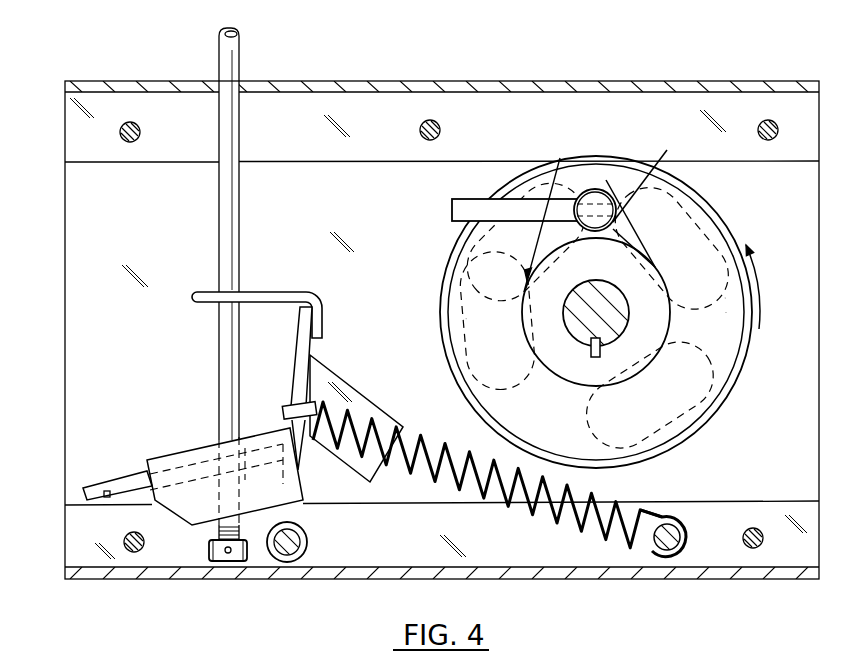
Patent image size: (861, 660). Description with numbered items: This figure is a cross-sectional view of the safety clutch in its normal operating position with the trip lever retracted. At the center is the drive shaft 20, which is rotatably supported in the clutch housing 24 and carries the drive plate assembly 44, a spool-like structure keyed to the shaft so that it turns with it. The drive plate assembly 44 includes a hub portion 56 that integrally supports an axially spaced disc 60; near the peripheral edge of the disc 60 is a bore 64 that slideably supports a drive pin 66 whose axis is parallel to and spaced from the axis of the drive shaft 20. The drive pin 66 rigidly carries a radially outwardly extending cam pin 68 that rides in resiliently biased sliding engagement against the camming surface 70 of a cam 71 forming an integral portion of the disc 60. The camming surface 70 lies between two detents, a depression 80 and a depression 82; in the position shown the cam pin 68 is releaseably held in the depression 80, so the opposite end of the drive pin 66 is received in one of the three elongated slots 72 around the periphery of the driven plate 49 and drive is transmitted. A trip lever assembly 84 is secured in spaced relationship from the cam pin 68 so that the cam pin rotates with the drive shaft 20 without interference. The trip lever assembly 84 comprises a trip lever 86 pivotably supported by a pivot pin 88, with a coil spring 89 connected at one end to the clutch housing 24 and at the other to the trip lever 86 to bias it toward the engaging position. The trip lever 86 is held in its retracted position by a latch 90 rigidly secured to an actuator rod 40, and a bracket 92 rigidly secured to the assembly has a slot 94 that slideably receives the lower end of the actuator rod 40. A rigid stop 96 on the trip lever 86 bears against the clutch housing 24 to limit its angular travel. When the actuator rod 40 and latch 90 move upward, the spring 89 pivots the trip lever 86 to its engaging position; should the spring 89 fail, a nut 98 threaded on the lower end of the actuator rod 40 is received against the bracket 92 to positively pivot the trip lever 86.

The drive shaft 20 is at (618, 311).
The clutch housing 24 is at (65, 118).
The actuator rod 40 is at (240, 63).
The drive plate assembly 44 is at (690, 449).
The driven plate 49 is at (764, 277).
The hub portion 56 is at (552, 256).
The disc 60 is at (738, 348).
The bore 64 is at (650, 175).
The drive pin 66 is at (657, 184).
The cam pin 68 is at (463, 200).
The camming surface 70 is at (590, 190).
The cam 71 is at (611, 200).
The slots 72 is at (462, 271).
The depression 80 is at (568, 192).
The depression 82 is at (643, 237).
The trip lever assembly 84 is at (191, 445).
The trip lever 86 is at (298, 386).
The pivot pin 88 is at (308, 545).
The coil spring 89 is at (438, 440).
The latch 90 is at (273, 292).
The bracket 92 is at (113, 480).
The slot 94 is at (109, 497).
The stop 96 is at (330, 369).
The nut 98 is at (208, 548).